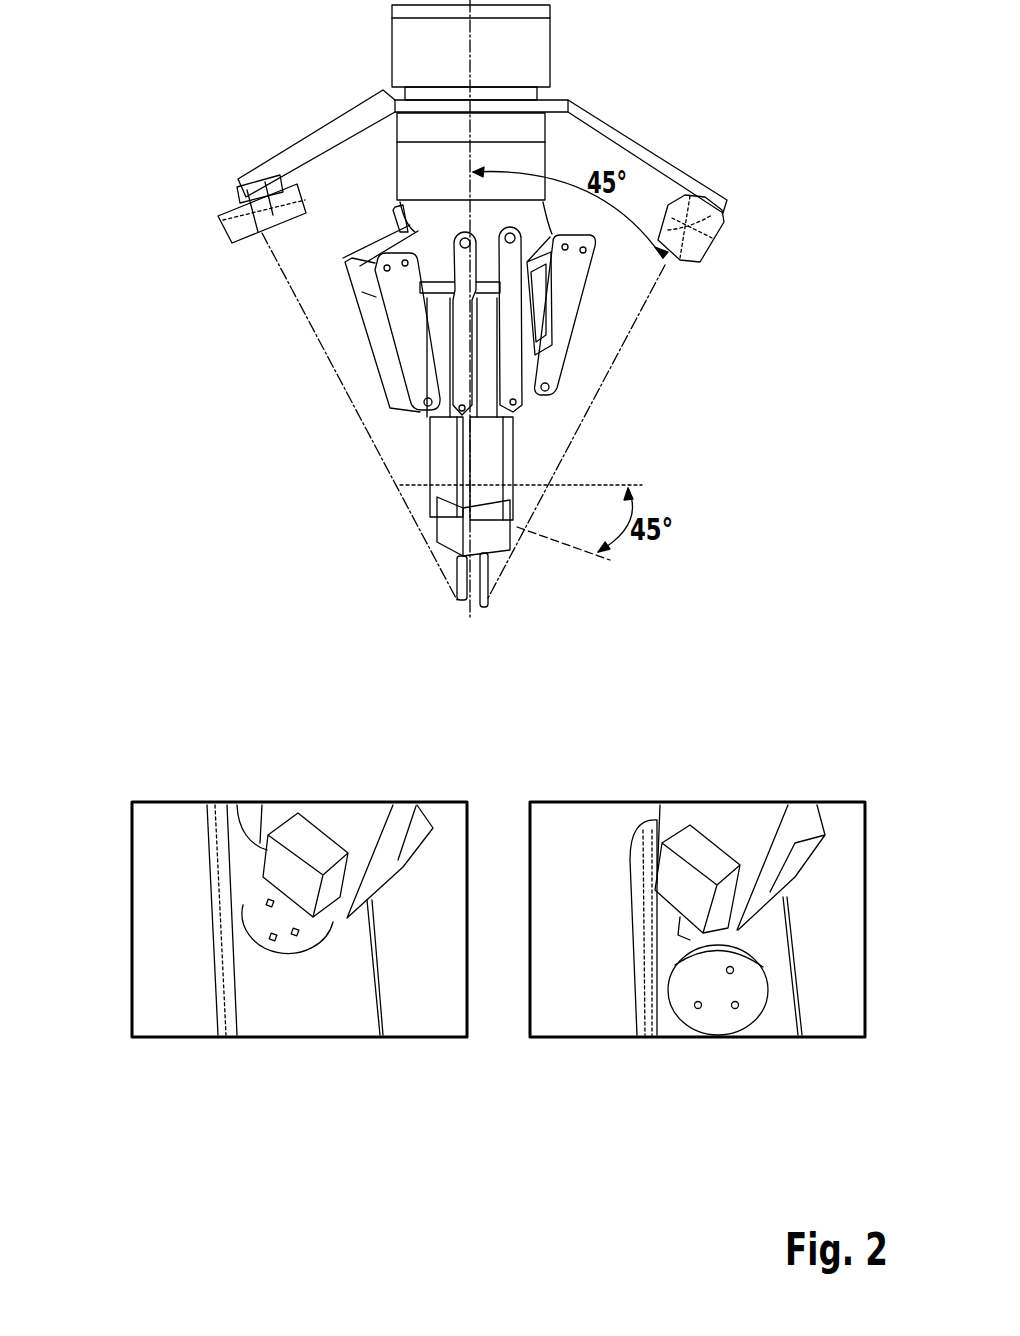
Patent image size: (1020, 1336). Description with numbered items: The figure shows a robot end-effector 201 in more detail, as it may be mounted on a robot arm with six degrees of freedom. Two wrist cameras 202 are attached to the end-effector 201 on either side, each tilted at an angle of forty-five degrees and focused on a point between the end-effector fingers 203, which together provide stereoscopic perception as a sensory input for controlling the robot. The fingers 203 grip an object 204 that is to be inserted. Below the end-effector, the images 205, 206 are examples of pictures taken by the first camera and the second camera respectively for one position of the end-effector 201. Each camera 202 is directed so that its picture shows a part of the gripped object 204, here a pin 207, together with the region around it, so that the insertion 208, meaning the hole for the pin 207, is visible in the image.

The robot end-effector 201 is at (536, 60).
The wrist camera 202 is at (233, 238).
The end-effector finger 203 is at (555, 343).
The object 204 is at (453, 535).
The image 205 is at (140, 778).
The image 206 is at (560, 778).
The pin 207 is at (303, 932).
The insertion 208 is at (270, 937).